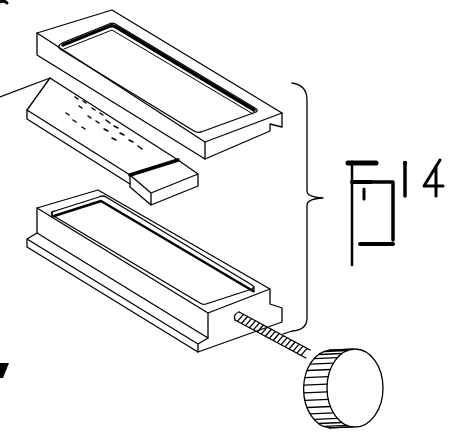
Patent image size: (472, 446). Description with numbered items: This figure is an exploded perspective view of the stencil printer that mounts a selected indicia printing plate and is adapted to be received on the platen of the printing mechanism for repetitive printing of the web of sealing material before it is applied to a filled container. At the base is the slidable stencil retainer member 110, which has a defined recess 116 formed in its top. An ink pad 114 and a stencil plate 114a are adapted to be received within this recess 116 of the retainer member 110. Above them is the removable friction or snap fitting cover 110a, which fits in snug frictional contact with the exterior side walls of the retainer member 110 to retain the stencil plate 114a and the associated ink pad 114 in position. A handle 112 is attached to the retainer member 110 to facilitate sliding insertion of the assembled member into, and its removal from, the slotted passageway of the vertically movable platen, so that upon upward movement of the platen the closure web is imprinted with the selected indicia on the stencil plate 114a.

The stencil retainer member 110 is at (154, 274).
The cover 110a is at (214, 73).
The handle 112 is at (321, 348).
The ink pad 114 is at (121, 148).
The stencil plate 114a is at (72, 139).
The recess 116 is at (206, 253).